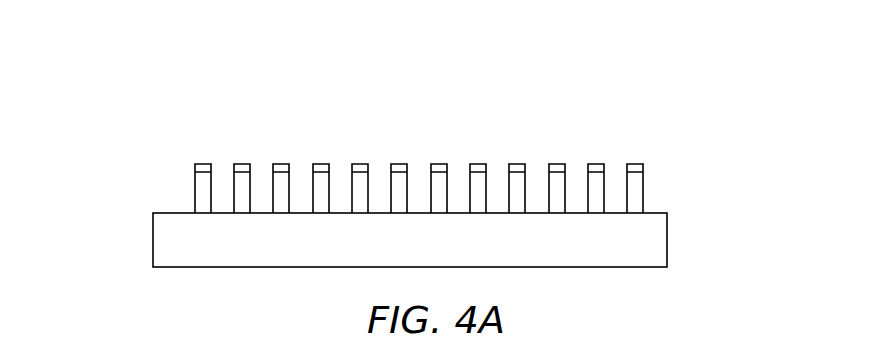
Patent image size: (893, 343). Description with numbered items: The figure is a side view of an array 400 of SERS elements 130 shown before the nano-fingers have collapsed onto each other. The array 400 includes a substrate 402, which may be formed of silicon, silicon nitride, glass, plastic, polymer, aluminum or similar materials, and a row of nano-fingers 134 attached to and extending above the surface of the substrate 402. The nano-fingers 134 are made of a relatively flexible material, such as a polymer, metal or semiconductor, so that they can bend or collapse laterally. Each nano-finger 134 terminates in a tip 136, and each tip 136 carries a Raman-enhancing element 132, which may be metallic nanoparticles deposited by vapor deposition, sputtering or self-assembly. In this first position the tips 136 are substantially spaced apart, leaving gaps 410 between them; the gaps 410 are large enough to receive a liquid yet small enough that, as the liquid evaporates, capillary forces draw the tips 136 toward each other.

The array 400 is at (153, 36).
The substrate 402 is at (667, 245).
The SERS elements 130 is at (185, 129).
The nano-fingers 134 is at (195, 198).
The gaps 410 is at (265, 169).
The tips 136 is at (428, 165).
The Raman-enhancing elements 132 is at (577, 140).